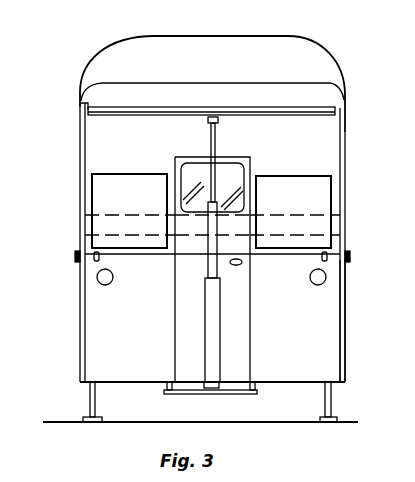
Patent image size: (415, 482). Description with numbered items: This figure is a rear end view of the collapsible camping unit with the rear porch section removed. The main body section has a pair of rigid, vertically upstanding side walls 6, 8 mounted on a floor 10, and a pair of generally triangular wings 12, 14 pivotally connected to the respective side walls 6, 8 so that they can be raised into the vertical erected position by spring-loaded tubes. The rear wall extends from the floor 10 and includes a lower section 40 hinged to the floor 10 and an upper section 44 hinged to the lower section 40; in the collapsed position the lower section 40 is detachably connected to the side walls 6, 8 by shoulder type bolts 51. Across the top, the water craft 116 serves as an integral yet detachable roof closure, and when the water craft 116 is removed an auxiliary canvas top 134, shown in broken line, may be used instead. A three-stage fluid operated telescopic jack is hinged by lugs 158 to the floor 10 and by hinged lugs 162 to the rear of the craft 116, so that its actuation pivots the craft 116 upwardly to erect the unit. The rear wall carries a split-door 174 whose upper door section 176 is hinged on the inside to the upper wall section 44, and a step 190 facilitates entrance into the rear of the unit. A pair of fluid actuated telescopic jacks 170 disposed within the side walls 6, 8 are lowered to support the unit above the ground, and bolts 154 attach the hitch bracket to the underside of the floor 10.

The water craft 116 is at (262, 36).
The auxiliary top 134 is at (268, 83).
The hinged lugs 162 is at (218, 120).
The upper door section 176 is at (250, 167).
The upper section 44 is at (95, 142).
The wing 12 is at (82, 205).
The wing 14 is at (347, 205).
The shoulder type bolts 51 is at (77, 261).
The side wall 6 is at (78, 314).
The side wall 8 is at (346, 325).
The lower section 40 is at (325, 352).
The split-door 174 is at (251, 296).
The bolts 154 is at (219, 343).
The telescopic jacks 170 is at (90, 400).
The lugs 158 is at (210, 389).
The step 190 is at (230, 395).
The floor 10 is at (287, 384).